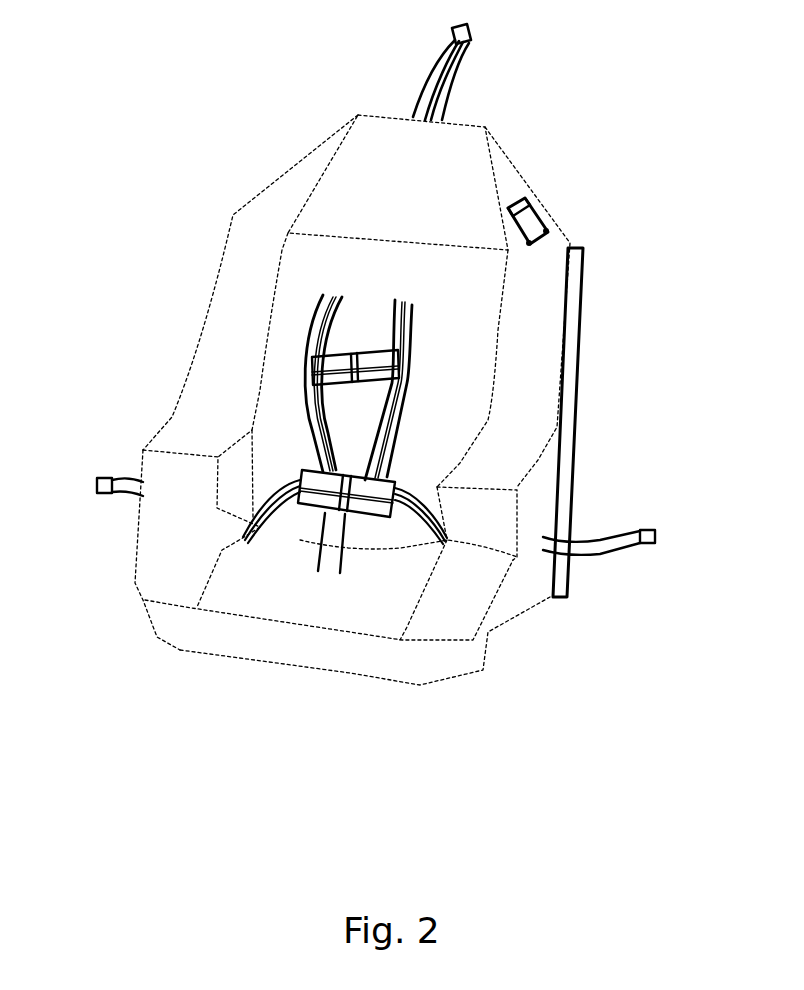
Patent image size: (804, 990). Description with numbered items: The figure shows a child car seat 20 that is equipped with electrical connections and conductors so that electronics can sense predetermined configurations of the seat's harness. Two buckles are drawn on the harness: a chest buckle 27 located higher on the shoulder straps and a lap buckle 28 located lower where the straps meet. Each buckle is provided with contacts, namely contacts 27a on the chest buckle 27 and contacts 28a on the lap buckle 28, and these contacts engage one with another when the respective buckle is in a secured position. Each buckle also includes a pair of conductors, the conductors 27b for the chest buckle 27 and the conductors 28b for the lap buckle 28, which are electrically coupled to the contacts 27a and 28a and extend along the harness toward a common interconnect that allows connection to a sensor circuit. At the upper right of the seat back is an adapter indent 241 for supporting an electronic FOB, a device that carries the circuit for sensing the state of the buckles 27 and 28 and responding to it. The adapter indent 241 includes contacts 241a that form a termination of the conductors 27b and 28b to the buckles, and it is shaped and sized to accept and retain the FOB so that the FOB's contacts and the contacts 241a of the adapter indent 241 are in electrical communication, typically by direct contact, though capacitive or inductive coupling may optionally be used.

The child car seat 20 is at (283, 158).
The chest buckle 27 is at (362, 395).
The contacts 27a is at (347, 360).
The conductors 27b is at (327, 320).
The lap buckle 28 is at (390, 484).
The contacts 28a is at (327, 481).
The conductors 28b is at (280, 495).
The adapter indent 241 is at (537, 220).
The contacts 241a is at (518, 208).